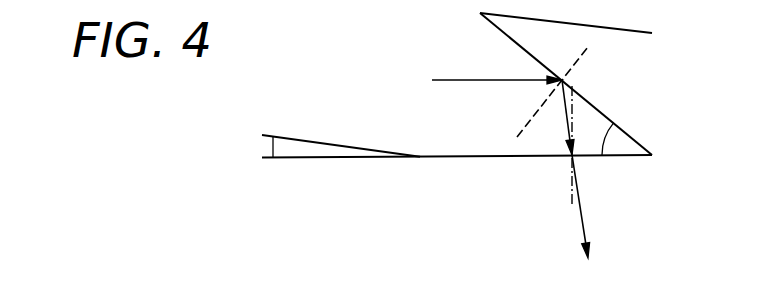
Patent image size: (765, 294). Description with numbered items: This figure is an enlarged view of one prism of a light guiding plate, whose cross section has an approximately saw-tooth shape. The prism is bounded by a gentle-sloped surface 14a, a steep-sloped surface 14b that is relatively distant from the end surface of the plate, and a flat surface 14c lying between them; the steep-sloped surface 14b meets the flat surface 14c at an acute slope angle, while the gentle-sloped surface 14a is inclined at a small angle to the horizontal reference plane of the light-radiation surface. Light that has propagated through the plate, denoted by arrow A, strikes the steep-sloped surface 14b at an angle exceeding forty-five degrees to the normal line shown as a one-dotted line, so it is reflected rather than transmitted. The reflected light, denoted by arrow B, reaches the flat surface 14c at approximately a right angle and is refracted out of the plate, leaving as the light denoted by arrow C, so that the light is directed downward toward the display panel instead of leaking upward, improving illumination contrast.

The arrow A is at (441, 80).
The arrow B is at (570, 83).
The emergent light beam C is at (583, 215).
The gentle-sloped surface 14a is at (345, 149).
The steep-sloped surface 14b is at (595, 107).
The flat surface 14c is at (460, 158).